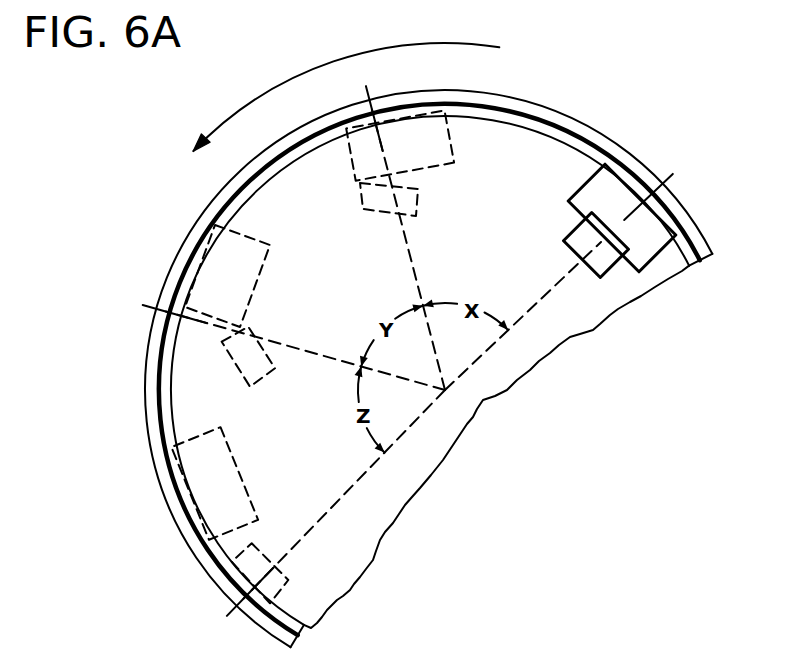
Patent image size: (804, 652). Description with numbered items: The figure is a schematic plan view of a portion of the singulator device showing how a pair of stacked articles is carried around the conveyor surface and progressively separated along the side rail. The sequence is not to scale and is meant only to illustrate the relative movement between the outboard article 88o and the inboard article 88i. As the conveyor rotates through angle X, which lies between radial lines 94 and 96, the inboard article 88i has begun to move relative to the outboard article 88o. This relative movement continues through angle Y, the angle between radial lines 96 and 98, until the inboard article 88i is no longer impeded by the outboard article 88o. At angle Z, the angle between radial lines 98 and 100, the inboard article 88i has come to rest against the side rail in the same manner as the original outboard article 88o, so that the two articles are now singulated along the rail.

The outboard article 88o is at (618, 187).
The inboard article 88i is at (623, 221).
The radial line 94 is at (547, 287).
The radial line 96 is at (420, 263).
The radial line 98 is at (322, 350).
The radial line 100 is at (313, 523).